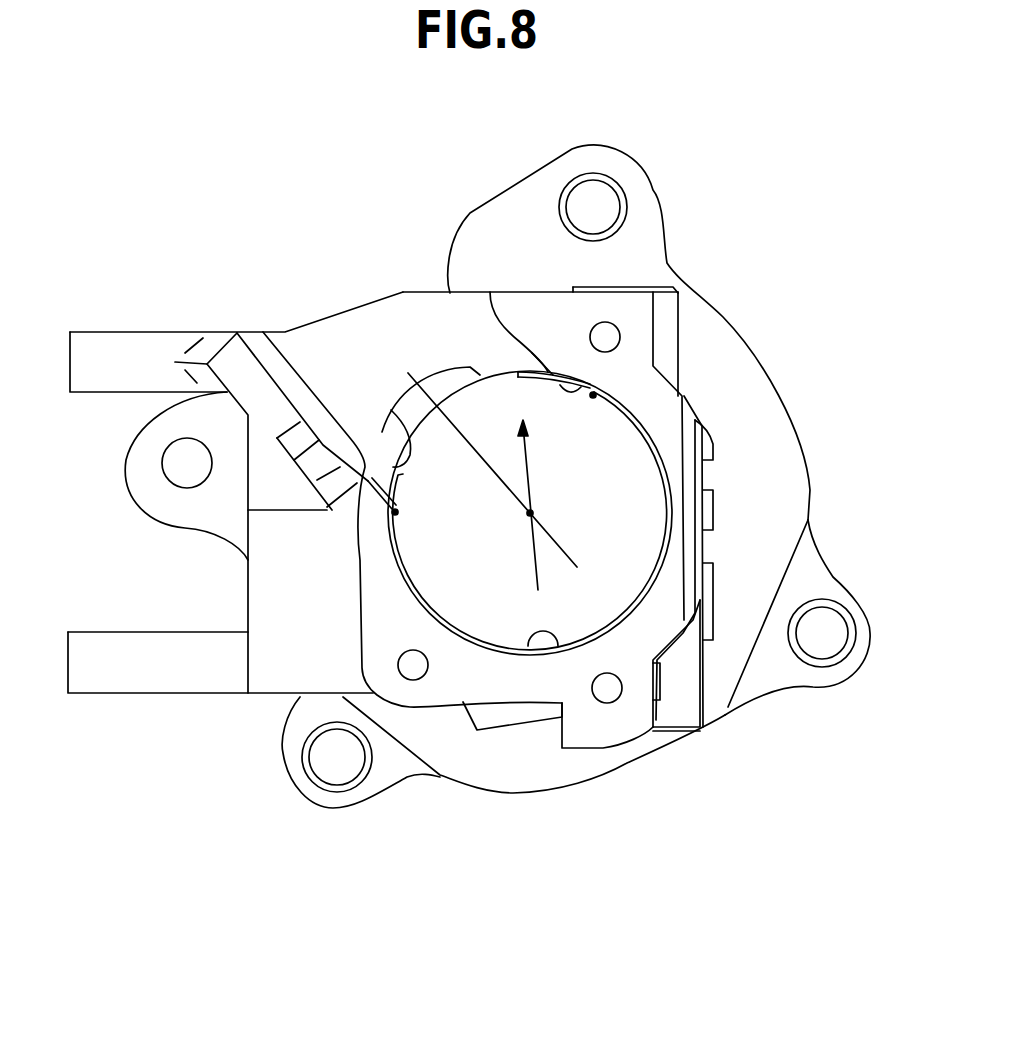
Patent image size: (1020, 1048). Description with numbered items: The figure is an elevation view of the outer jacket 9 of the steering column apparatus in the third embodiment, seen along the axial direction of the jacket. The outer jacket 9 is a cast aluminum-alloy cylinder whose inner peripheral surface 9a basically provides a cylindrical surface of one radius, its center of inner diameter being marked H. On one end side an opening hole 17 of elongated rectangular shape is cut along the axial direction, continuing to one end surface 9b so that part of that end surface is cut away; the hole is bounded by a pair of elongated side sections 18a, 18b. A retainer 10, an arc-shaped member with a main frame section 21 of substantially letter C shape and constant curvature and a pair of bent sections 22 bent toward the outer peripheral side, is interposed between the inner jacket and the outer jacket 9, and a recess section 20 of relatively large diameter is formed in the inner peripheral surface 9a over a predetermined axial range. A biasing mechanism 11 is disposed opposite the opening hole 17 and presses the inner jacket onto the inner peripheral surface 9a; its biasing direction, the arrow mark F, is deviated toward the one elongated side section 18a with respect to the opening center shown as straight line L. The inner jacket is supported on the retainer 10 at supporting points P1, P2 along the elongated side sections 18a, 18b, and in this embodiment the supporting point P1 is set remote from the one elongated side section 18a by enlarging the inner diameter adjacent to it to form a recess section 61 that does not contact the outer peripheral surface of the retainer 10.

The outer jacket 9 is at (755, 247).
The inner peripheral surface 9a is at (558, 640).
The one end surface 9b is at (453, 683).
The retainer 10 is at (642, 438).
The biasing mechanism 11 is at (506, 740).
The opening hole 17 is at (391, 410).
The one elongated side section 18a is at (535, 366).
The other elongated side section 18b is at (265, 333).
The recess section 20 is at (364, 455).
The main frame section 21 is at (410, 593).
The bent sections 22 is at (540, 372).
The recess section 61 is at (580, 410).
The straight line L is at (416, 372).
The arrow mark F is at (530, 483).
The center of inner diameter H is at (530, 515).
The supporting point P1 is at (592, 396).
The supporting point P2 is at (397, 513).